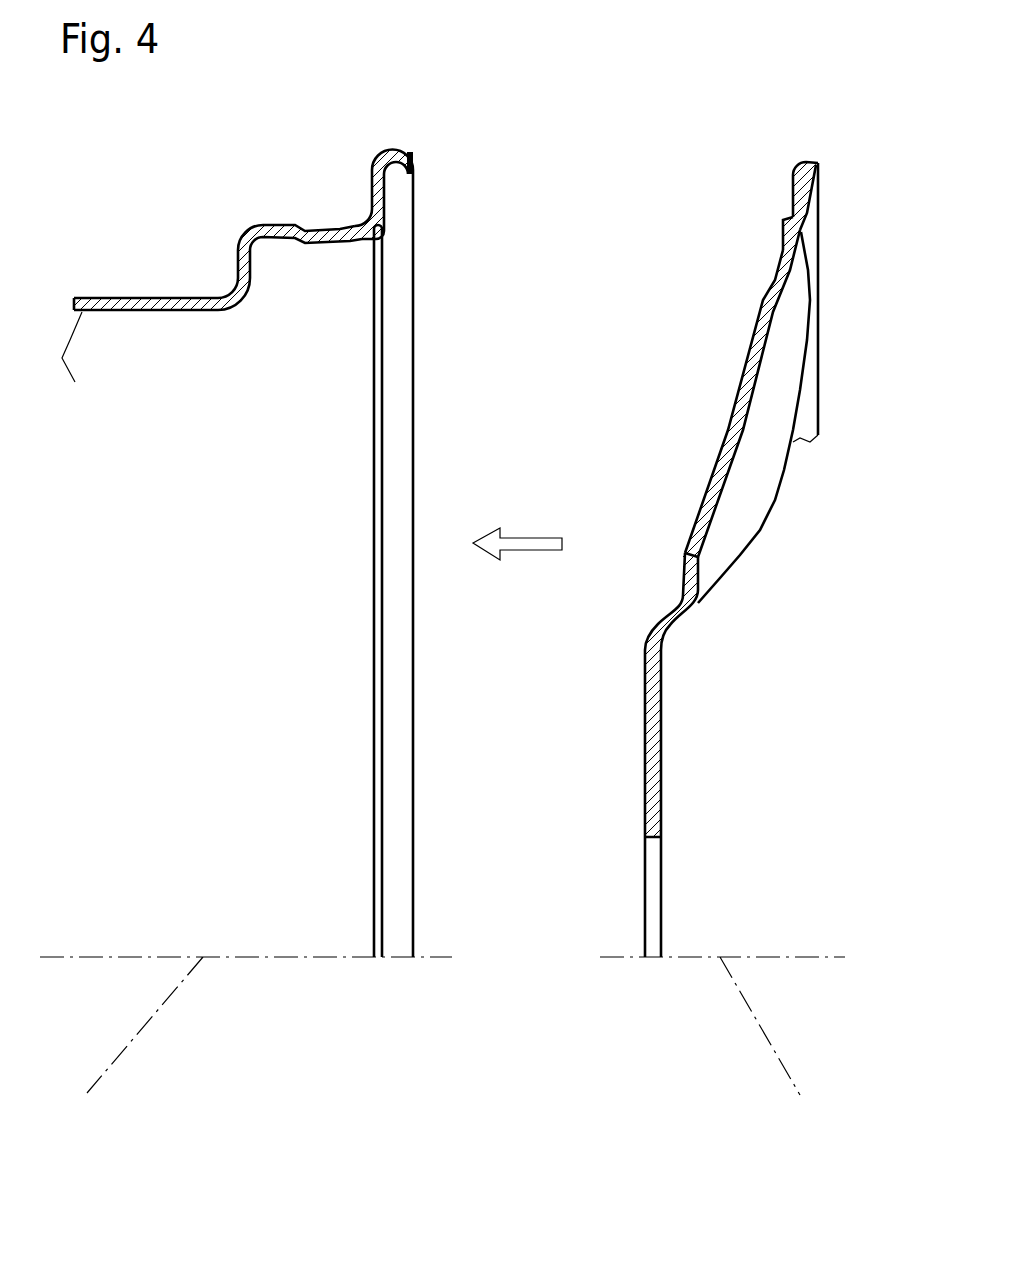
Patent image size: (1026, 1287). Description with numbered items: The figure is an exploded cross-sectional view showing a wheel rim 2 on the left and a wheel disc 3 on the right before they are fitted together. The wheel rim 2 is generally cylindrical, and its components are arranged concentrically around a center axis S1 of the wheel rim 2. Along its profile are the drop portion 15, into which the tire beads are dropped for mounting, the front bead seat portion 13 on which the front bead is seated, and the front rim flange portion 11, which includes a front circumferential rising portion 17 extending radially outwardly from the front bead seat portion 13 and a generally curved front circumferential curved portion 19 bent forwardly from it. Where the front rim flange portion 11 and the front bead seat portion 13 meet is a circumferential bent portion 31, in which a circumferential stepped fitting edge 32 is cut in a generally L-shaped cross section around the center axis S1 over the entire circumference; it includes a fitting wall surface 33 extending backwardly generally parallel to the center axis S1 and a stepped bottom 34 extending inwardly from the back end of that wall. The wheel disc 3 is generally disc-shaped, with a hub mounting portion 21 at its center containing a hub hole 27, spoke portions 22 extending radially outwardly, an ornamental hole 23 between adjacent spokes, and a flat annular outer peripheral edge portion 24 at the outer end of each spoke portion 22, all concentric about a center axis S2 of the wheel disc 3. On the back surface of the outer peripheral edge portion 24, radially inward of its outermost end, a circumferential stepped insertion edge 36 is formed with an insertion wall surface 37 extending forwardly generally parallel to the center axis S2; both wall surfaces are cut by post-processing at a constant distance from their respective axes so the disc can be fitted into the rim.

The wheel rim 2 is at (118, 298).
The wheel disc 3 is at (643, 782).
The front rim flange portion 11 is at (388, 152).
The front bead seat portion 13 is at (303, 225).
The drop portion 15 is at (143, 305).
The front circumferential rising portion 17 is at (377, 192).
The front circumferential curved portion 19 is at (408, 152).
The hub mounting portion 21 is at (662, 743).
The spoke portion 22 is at (773, 408).
The ornamental hole 23 is at (707, 518).
The outer peripheral edge portion 24 is at (800, 188).
The hub hole 27 is at (657, 915).
The circumferential bent portion 31 is at (372, 222).
The circumferential stepped fitting edge 32 is at (380, 333).
The fitting wall surface 33 is at (377, 283).
The stepped bottom 34 is at (382, 227).
The circumferential stepped insertion edge 36 is at (800, 230).
The insertion wall surface 37 is at (787, 220).
The center axis of the wheel rim S1 is at (246, 1046).
The center axis of the wheel disc S2 is at (722, 1045).